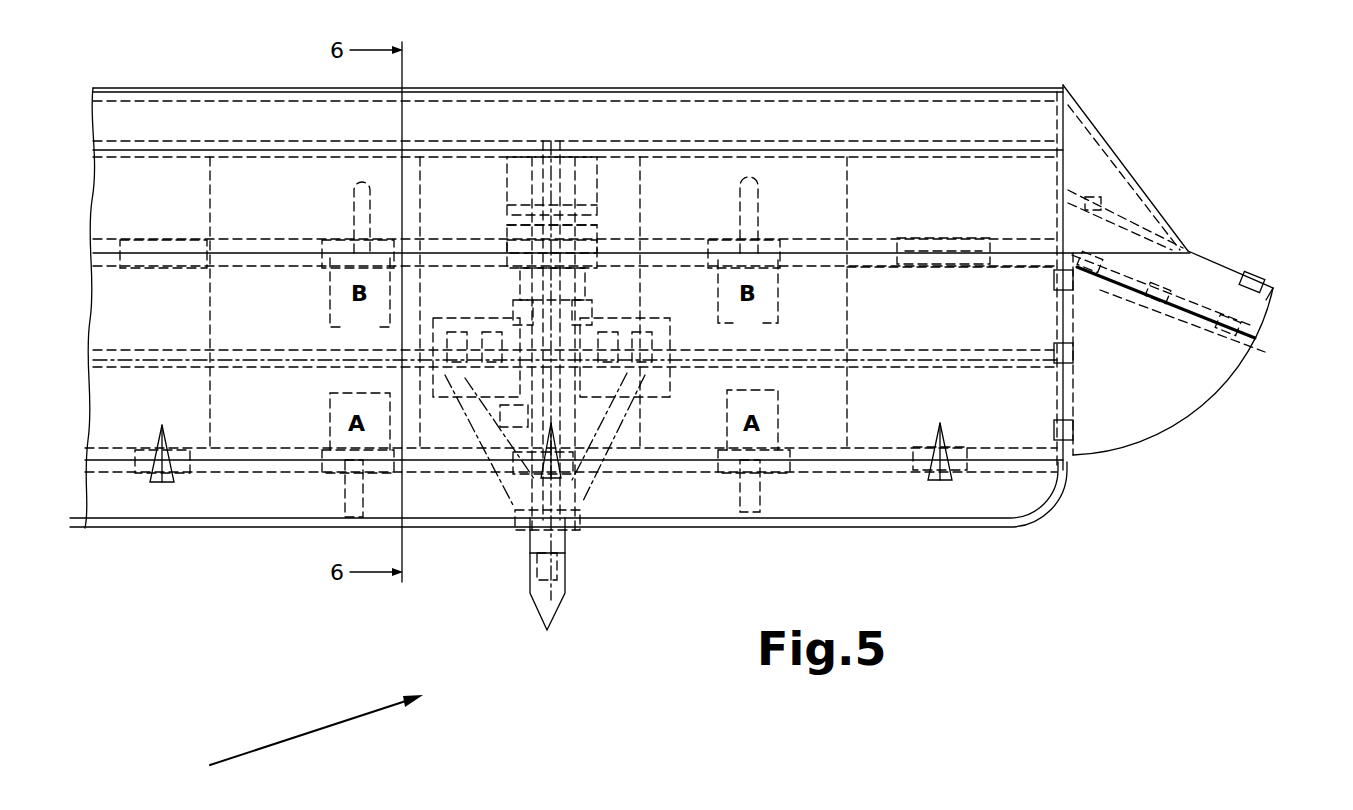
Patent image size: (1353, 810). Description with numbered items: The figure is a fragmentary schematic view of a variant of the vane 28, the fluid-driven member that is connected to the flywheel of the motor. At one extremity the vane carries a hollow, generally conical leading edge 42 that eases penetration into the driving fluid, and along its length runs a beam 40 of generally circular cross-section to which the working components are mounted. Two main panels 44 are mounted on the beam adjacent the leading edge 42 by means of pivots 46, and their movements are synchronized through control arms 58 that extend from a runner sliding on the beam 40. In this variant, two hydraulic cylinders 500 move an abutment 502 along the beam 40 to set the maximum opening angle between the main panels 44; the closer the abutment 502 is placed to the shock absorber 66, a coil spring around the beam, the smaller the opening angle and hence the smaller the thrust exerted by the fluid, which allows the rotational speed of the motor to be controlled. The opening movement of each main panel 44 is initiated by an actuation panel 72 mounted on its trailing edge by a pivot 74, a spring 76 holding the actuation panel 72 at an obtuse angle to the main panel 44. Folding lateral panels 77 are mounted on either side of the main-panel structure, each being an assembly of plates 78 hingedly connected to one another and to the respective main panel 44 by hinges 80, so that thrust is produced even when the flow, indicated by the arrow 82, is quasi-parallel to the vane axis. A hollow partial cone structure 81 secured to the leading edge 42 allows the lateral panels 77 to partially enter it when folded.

The vane 28 is at (800, 85).
The leading edge 42 is at (245, 105).
The beam 40 is at (568, 160).
The pivots 46 is at (595, 245).
The main panels 44 is at (971, 324).
The hydraulic cylinders 500 is at (525, 300).
The abutment 502 is at (530, 415).
The control arms 58 is at (600, 410).
The pivot 74 is at (960, 442).
The spring 76 is at (345, 498).
The shock absorber 66 is at (550, 603).
The actuation panel 72 is at (838, 508).
The plates 78 is at (1212, 294).
The hinges 80 is at (1250, 282).
The folding lateral panels 77 is at (1232, 260).
The partial cone structure 81 is at (1085, 143).
The arrow 82 is at (310, 730).